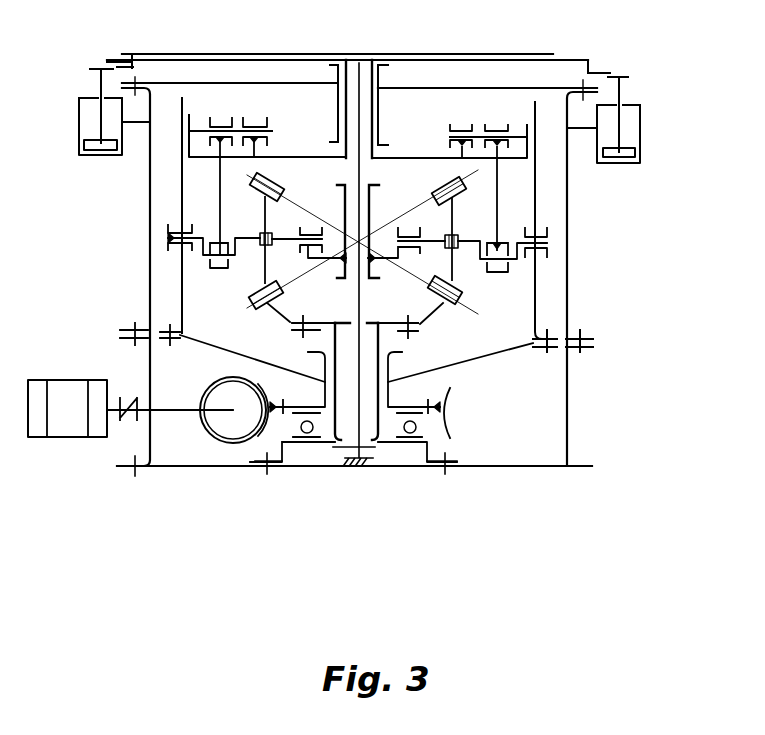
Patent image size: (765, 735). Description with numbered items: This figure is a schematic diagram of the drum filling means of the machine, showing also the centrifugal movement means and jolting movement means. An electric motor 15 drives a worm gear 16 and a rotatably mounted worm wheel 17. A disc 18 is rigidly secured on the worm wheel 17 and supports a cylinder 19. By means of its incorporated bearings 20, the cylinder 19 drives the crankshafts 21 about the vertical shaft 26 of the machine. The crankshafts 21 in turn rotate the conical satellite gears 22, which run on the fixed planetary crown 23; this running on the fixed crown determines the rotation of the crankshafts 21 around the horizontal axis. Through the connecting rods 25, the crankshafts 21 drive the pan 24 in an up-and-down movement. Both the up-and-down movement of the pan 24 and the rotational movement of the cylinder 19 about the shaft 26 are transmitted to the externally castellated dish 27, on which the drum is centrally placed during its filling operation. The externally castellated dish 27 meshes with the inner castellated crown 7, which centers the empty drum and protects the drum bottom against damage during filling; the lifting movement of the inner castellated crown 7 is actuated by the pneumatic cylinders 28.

The inner castellated crown 7 is at (602, 66).
The electric motor 15 is at (60, 430).
The worm gear 16 is at (227, 440).
The worm wheel 17 is at (450, 437).
The disc 18 is at (450, 367).
The cylinder 19 is at (535, 315).
The bearings 20 is at (418, 250).
The crankshafts 21 is at (522, 264).
The conical satellite gears 22 is at (457, 192).
The fixed planetary crown 23 is at (422, 324).
The pan 24 is at (527, 143).
The connecting rods 25 is at (497, 178).
The vertical shaft 26 is at (357, 427).
The externally castellated dish 27 is at (557, 55).
The pneumatic cylinders 28 is at (632, 115).